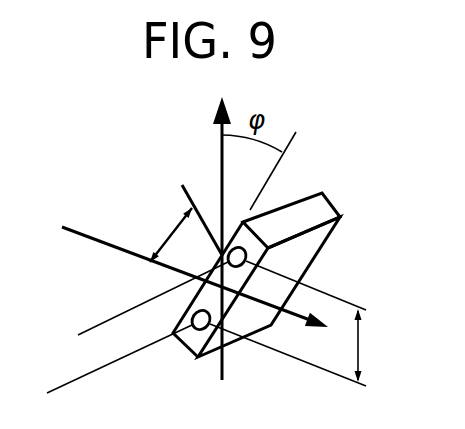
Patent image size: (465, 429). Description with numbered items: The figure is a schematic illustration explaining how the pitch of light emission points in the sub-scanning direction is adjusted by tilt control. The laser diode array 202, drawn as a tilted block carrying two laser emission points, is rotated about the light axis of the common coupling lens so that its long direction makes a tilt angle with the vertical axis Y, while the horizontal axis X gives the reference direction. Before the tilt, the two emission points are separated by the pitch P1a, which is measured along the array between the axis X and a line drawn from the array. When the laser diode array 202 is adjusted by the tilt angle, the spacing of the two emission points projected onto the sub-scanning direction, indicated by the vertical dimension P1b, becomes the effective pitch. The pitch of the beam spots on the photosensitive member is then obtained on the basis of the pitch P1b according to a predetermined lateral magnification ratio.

The laser diode array 202 is at (303, 257).
The X axis X is at (190, 277).
The Y axis Y is at (211, 238).
The pitch P1a is at (172, 223).
The pitch P1b is at (381, 345).